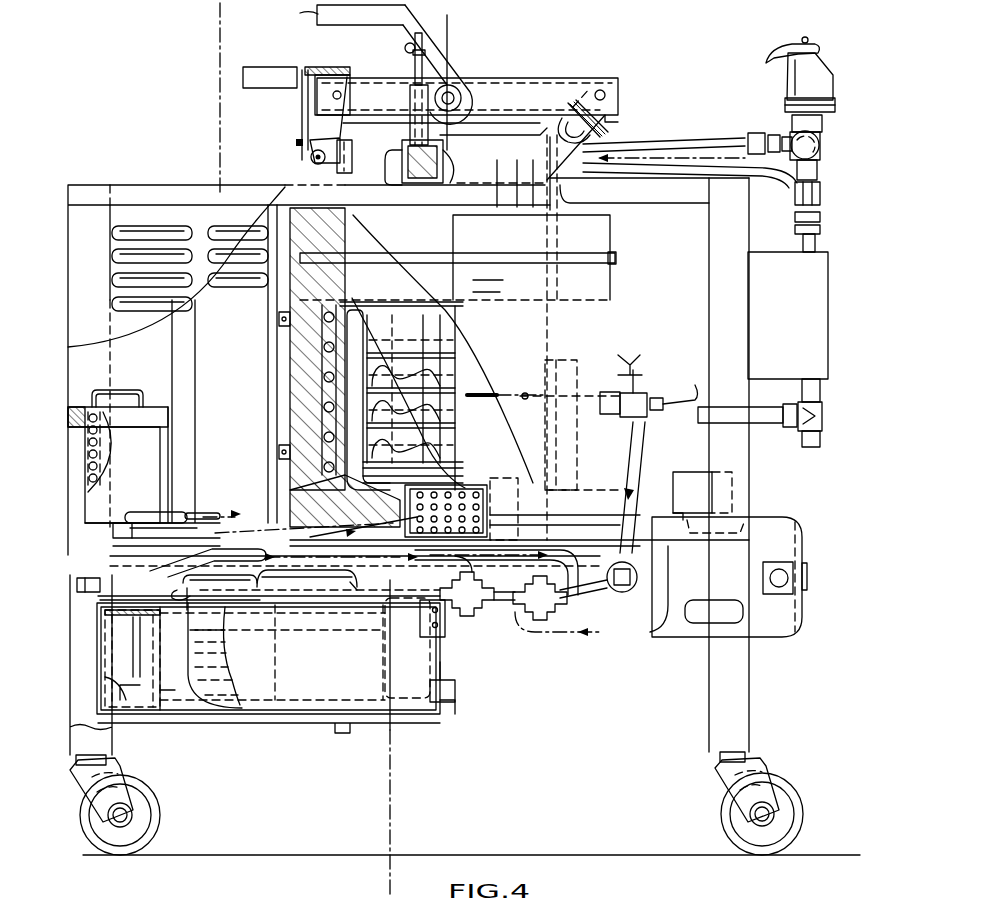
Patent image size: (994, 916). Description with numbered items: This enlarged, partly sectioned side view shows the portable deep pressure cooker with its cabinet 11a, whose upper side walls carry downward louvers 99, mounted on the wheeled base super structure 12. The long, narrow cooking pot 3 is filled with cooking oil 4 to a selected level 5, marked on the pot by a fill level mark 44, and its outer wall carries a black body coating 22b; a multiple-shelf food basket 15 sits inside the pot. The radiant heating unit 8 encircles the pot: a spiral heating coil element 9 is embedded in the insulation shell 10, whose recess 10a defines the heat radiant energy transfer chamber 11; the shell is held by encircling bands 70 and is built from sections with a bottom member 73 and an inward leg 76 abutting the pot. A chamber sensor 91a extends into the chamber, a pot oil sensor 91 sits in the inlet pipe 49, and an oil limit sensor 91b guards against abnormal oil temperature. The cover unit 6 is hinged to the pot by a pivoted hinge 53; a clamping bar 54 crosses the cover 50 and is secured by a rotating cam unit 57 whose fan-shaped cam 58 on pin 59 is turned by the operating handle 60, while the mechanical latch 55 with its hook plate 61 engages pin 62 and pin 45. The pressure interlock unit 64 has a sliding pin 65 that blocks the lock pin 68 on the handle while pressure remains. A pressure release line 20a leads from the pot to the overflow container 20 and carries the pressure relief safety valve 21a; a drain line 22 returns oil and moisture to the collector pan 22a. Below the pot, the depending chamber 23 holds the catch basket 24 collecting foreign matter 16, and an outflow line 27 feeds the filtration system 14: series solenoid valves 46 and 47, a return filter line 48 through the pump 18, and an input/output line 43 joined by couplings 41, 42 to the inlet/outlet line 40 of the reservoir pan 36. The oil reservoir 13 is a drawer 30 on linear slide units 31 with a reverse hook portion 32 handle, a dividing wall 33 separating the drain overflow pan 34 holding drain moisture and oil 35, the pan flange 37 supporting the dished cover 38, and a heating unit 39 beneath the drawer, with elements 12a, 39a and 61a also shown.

The cooking pot 3 is at (387, 296).
The cooking oil 4 is at (226, 655).
The selected level 5 is at (212, 12).
The cover unit 6 is at (545, 62).
The radiant heating unit 8 is at (274, 318).
The heating coil element 9 is at (447, 22).
The insulation shell 10 is at (290, 282).
The recess 10a is at (320, 413).
The heat radiant energy transfer chamber 11 is at (345, 347).
The cabinet 11a is at (85, 327).
The wheeled base super structure 12 is at (392, 392).
The support column 12a is at (710, 700).
The oil reservoir 13 is at (303, 768).
The filtration system 14 is at (581, 643).
The multiple-shelf food basket 15 is at (374, 352).
The foreign matter 16 is at (430, 520).
The pump 18 is at (166, 400).
The overflow container 20 is at (828, 331).
The pressure release line 20a is at (695, 146).
The pressure relief safety valve 21a is at (835, 92).
The drain line 22 is at (765, 428).
The collector pan 22a is at (105, 626).
The black body coating 22b is at (320, 370).
The depending chamber 23 is at (412, 552).
The catch basket 24 is at (330, 488).
The outflow line 27 is at (580, 556).
The supporting drawer 30 is at (182, 722).
The linear slide units 31 is at (320, 640).
The reverse hook portion 32 is at (72, 580).
The dividing wall 33 is at (160, 698).
The drain overflow pan 34 is at (108, 659).
The drain moisture and oil 35 is at (115, 699).
The reservoir pan 36 is at (222, 713).
The encircling flange 37 is at (182, 583).
The dished cover 38 is at (275, 682).
The heating unit 39 is at (197, 572).
The tray support 39a is at (330, 726).
The inlet/outlet line 40 is at (430, 666).
The releasable coupling member 41 is at (420, 602).
The complementing coupling 42 is at (508, 620).
The input/output line 43 is at (446, 606).
The fill level mark 44 is at (495, 263).
The pin 45 is at (503, 288).
The solenoid valve 46 is at (548, 610).
The solenoid valve 47 is at (437, 628).
The return filter line 48 is at (630, 480).
The inlet pipe 49 is at (630, 392).
The cover 50 is at (510, 128).
The pivoted hinge 53 is at (600, 125).
The clamping bar 54 is at (562, 90).
The mechanical latch 55 is at (296, 141).
The rotating cam unit 57 is at (470, 84).
The fan-shaped cam 58 is at (412, 108).
The pin 59 is at (462, 100).
The operating handle 60 is at (343, 12).
The hook plate 61 is at (300, 112).
The pivot 61a is at (311, 158).
The pin 62 is at (317, 163).
The pressure interlock unit 64 is at (400, 184).
The sliding pin 65 is at (405, 46).
The lock pin 68 is at (414, 50).
The encircling bands 70 is at (610, 245).
The bottom member 73 is at (303, 512).
The inward leg 76 is at (333, 262).
The pot oil sensor 91 is at (656, 398).
The chamber sensor 91a is at (485, 393).
The oil limit sensor 91b is at (588, 382).
The louvers 99 is at (125, 259).